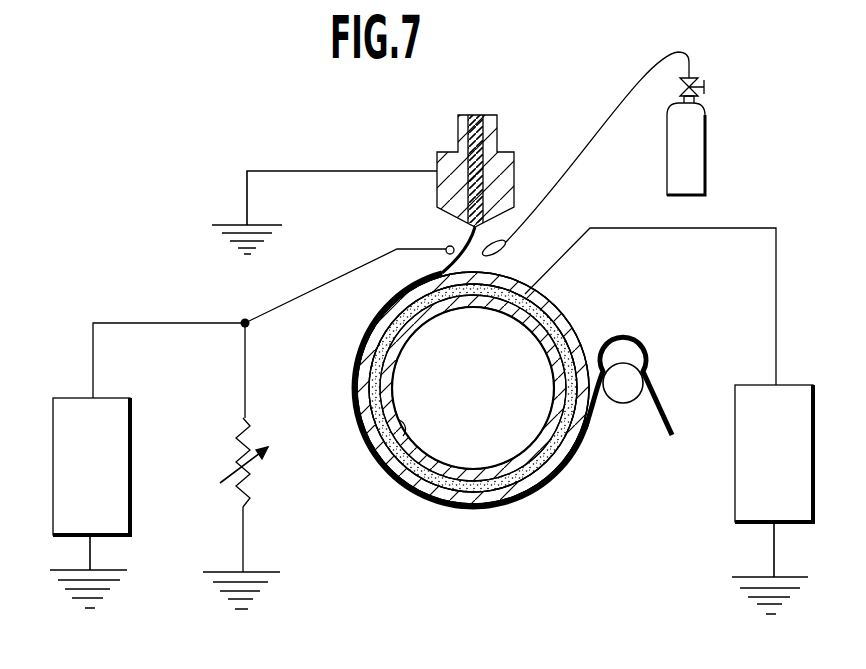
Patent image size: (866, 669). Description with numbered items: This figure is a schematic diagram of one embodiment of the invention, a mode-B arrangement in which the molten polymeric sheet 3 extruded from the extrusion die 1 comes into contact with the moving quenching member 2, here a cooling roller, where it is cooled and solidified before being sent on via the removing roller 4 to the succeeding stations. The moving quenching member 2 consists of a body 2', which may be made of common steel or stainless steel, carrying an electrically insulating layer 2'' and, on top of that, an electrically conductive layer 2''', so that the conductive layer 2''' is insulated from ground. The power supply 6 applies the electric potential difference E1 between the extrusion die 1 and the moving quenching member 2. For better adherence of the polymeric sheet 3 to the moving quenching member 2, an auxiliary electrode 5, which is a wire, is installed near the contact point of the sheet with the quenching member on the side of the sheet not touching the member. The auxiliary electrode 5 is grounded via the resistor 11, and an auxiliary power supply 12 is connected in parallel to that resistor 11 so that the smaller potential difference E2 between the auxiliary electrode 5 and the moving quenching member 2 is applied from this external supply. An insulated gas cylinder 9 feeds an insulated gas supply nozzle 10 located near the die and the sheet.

The extrusion die 1 is at (514, 158).
The moving quenching member 2 is at (483, 385).
The body 2' is at (456, 397).
The electrically insulating layer 2'' is at (504, 388).
The electrically conductive layer 2''' is at (510, 388).
The polymeric sheet 3 is at (352, 373).
The removing roller 4 is at (623, 405).
The auxiliary electrode 5 is at (447, 246).
The power supply 6 is at (813, 458).
The insulated gas cylinder 9 is at (705, 137).
The insulated gas supply nozzle 10 is at (505, 243).
The resistor 11 is at (235, 457).
The auxiliary power supply 12 is at (130, 483).